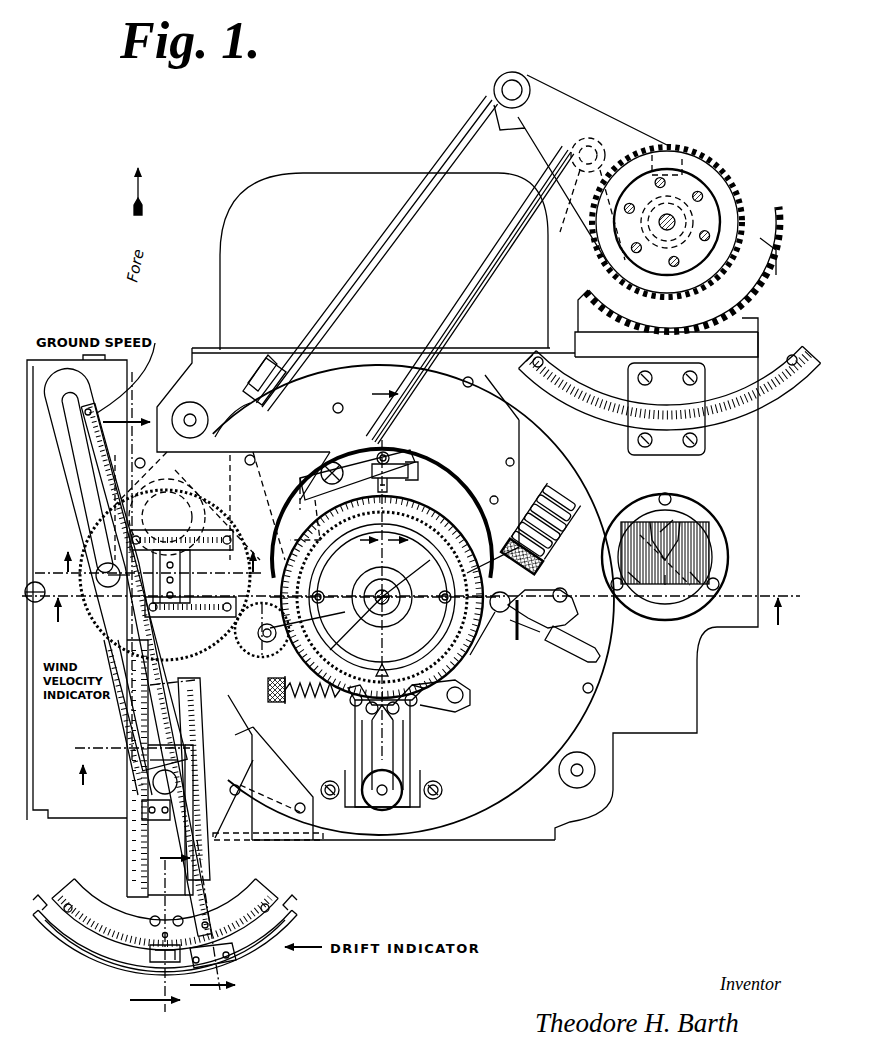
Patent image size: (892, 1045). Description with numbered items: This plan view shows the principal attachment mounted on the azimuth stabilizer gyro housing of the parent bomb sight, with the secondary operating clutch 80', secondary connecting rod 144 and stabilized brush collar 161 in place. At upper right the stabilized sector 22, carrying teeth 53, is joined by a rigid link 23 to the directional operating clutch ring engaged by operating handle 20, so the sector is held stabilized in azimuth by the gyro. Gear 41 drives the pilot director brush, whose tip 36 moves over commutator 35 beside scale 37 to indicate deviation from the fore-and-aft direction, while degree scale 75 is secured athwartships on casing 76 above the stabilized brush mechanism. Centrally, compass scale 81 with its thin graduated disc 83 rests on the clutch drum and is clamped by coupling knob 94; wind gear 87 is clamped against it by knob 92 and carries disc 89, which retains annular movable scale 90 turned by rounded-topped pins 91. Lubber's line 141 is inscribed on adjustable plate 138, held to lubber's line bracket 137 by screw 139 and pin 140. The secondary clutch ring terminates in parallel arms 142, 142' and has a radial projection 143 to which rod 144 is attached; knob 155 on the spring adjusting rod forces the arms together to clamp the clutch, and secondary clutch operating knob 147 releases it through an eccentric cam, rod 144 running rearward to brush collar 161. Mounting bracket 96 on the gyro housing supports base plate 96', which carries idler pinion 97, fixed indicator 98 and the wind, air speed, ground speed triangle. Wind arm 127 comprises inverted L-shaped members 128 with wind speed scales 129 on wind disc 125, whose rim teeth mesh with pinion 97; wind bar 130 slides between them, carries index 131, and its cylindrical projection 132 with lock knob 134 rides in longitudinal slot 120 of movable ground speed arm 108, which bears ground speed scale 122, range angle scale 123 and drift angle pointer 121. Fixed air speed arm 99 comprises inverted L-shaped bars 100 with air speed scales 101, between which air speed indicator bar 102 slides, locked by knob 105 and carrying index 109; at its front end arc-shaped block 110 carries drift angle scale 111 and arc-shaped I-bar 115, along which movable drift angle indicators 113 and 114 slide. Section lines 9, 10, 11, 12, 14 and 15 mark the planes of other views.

The stabilized sector 22 is at (562, 108).
The rigid link 23 is at (350, 283).
The secondary connecting rod 144 is at (460, 305).
The adjustable stabilized brush collar 161 is at (598, 175).
The gear 41 is at (712, 170).
The teeth 53 is at (770, 285).
The scale 75 is at (718, 420).
The casing 76 is at (758, 470).
The brush tip 36 is at (690, 545).
The commutator 35 is at (700, 562).
The scale 37 is at (648, 598).
The operating handle 20 is at (580, 645).
The section line 11 is at (298, 688).
The section line 9 is at (412, 607).
The section line 12 is at (158, 568).
The section line 10 is at (141, 712).
The section line 14 is at (191, 921).
The section line 15 is at (383, 391).
The compass scale 81 is at (430, 522).
The wind gear 87 is at (448, 535).
The thin supported disc 83 is at (468, 552).
The disc 89 is at (382, 597).
The knob 92 is at (368, 578).
The rounded-topped pins 91 is at (322, 595).
The coupling knob 94 is at (372, 610).
The annular movable scale 90 is at (385, 600).
The radial projection 143 is at (372, 513).
The screw 139 is at (328, 462).
The pin 140 is at (388, 455).
The lubber's line bracket 137 is at (408, 465).
The adjustable lubber's line plate 138 is at (418, 465).
The lubber's line 141 is at (395, 487).
The clutch spring adjusting knob 155 is at (278, 704).
The clutch operating arm 142 is at (370, 746).
The clutch operating arm 142' is at (409, 755).
The secondary operating clutch 80' is at (441, 707).
The secondary clutch operating knob 147 is at (382, 803).
The mounting bracket 96 is at (264, 783).
The base plate 96' is at (268, 851).
The idler pinion 97 is at (262, 633).
The fixed indicator 98 is at (275, 628).
The wind arm 127 is at (190, 530).
The index 131 is at (172, 507).
The wind disc 125 is at (230, 545).
The inverted L-shaped parallel members 128 is at (192, 551).
The scale 129 is at (192, 597).
The wind bar 130 is at (184, 576).
The wind bar lock knob 134 is at (100, 568).
The cylindrical projection 132 is at (91, 578).
The drift angle pointer 121 is at (161, 669).
The range angle scale 123 is at (120, 718).
The longitudinal through slot 120 is at (140, 745).
The scale 122 is at (190, 735).
The movable ground speed arm 108 is at (168, 682).
The knob 105 is at (155, 790).
The index 109 is at (142, 808).
The fixed air speed arm 99 is at (125, 887).
The scale 101 is at (130, 838).
The air speed indicator bar 102 is at (166, 820).
The inverted L-shaped bars 100 is at (200, 848).
The arc-shaped block 110 is at (95, 900).
The arc-shaped drift angle scale 111 is at (108, 898).
The arc-shaped I-bar 115 is at (92, 942).
The movable drift angle indicator 114 is at (160, 958).
The movable drift angle indicator 113 is at (232, 965).